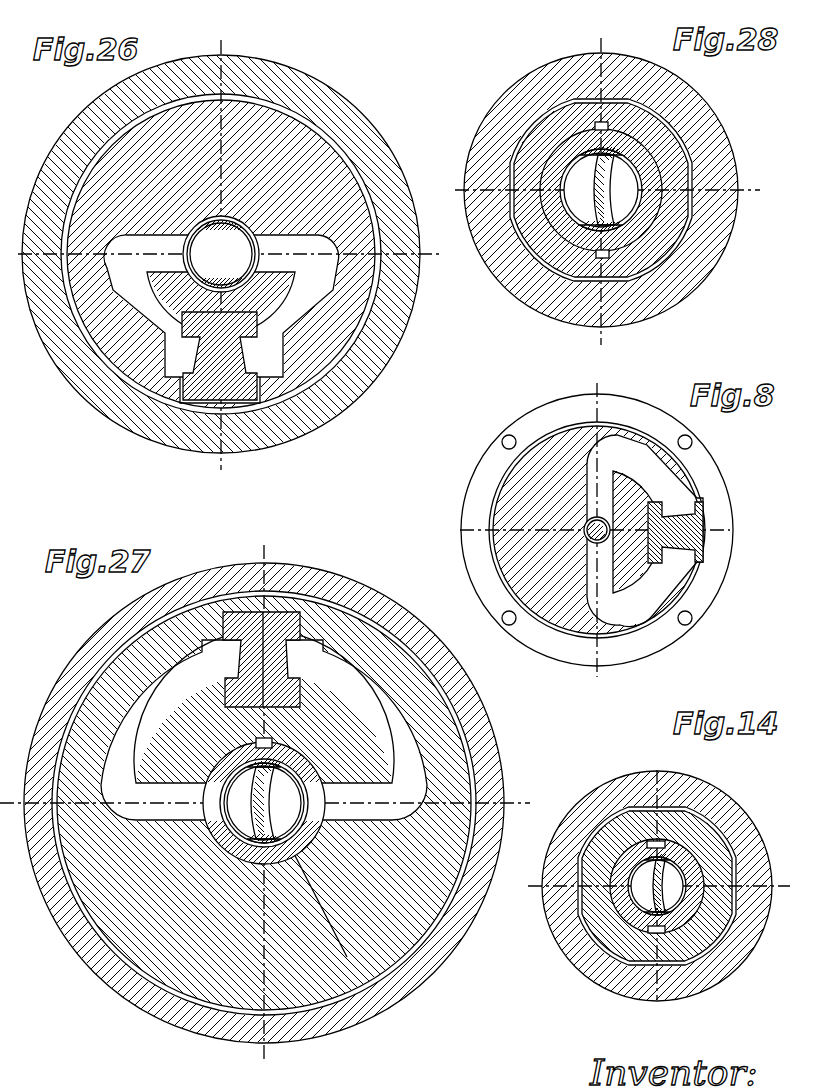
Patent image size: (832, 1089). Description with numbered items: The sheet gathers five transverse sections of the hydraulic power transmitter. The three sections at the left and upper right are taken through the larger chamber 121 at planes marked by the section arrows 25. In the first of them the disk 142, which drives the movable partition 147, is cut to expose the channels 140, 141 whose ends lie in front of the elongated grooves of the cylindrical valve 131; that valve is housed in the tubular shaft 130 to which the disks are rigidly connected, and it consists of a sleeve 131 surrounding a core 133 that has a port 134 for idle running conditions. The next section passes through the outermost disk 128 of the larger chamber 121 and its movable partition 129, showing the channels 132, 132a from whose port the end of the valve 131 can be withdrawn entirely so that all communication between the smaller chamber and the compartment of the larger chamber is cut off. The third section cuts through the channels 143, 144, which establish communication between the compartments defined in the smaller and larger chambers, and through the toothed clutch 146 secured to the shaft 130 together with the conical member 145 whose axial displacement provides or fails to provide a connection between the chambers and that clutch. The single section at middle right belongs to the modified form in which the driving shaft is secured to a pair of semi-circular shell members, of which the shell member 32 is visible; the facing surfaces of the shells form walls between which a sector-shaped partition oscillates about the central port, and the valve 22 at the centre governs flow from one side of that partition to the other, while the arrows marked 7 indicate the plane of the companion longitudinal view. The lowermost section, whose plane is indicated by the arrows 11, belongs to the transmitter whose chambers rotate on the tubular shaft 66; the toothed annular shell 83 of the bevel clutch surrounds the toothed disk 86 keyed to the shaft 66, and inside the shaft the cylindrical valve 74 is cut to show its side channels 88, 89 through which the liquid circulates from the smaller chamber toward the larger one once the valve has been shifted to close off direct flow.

In FIG. 26, the larger chamber 121 is at (328, 107).
In FIG. 27, the larger chamber 121 is at (487, 752).
In FIG. 26, the disk 142 is at (340, 182).
In FIG. 26, the channel 140 is at (112, 290).
In FIG. 26, the core 133 is at (247, 287).
In FIG. 28, the core 133 is at (527, 138).
In FIG. 26, the movable partition 147 is at (240, 390).
In FIG. 26, the port 134 is at (210, 248).
In FIG. 26, the channel 141 is at (328, 291).
In FIG. 26, the cylindrical valve 131 is at (130, 320).
In FIG. 27, the cylindrical valve 131 is at (256, 862).
In FIG. 28, the cylindrical valve 131 is at (575, 210).
In FIG. 26, the section line 25- 25 is at (236, 43).
In FIG. 27, the section line 25- 25 is at (279, 552).
In FIG. 28, the section line 25- 25 is at (615, 42).
In FIG. 27, the disk 128 is at (413, 923).
In FIG. 27, the channel 132 is at (128, 675).
In FIG. 27, the channel 132a is at (365, 688).
In FIG. 27, the movable partition 129 is at (283, 620).
In FIG. 27, the channel 143 is at (250, 855).
In FIG. 28, the channel 143 is at (582, 177).
In FIG. 27, the channel 144 is at (373, 983).
In FIG. 28, the channel 144 is at (640, 205).
In FIG. 28, the tubular shaft 130 is at (627, 267).
In FIG. 28, the toothed clutch 146 is at (657, 140).
In FIG. 28, the conical member 145 is at (722, 158).
In FIG. 8, the semi-circular shell member 32 is at (717, 483).
In FIG. 8, the valve 22 is at (590, 540).
In FIG. 8, the section line 7- 7 is at (453, 548).
In FIG. 14, the toothed annular shell 83 is at (715, 800).
In FIG. 14, the toothed disk 86 is at (617, 818).
In FIG. 14, the tubular shaft 66 is at (700, 914).
In FIG. 14, the side channel 89 is at (697, 947).
In FIG. 14, the side channel 88 is at (620, 903).
In FIG. 14, the cylindrical valve 74 is at (650, 898).
In FIG. 14, the section line 11- 11 is at (671, 762).